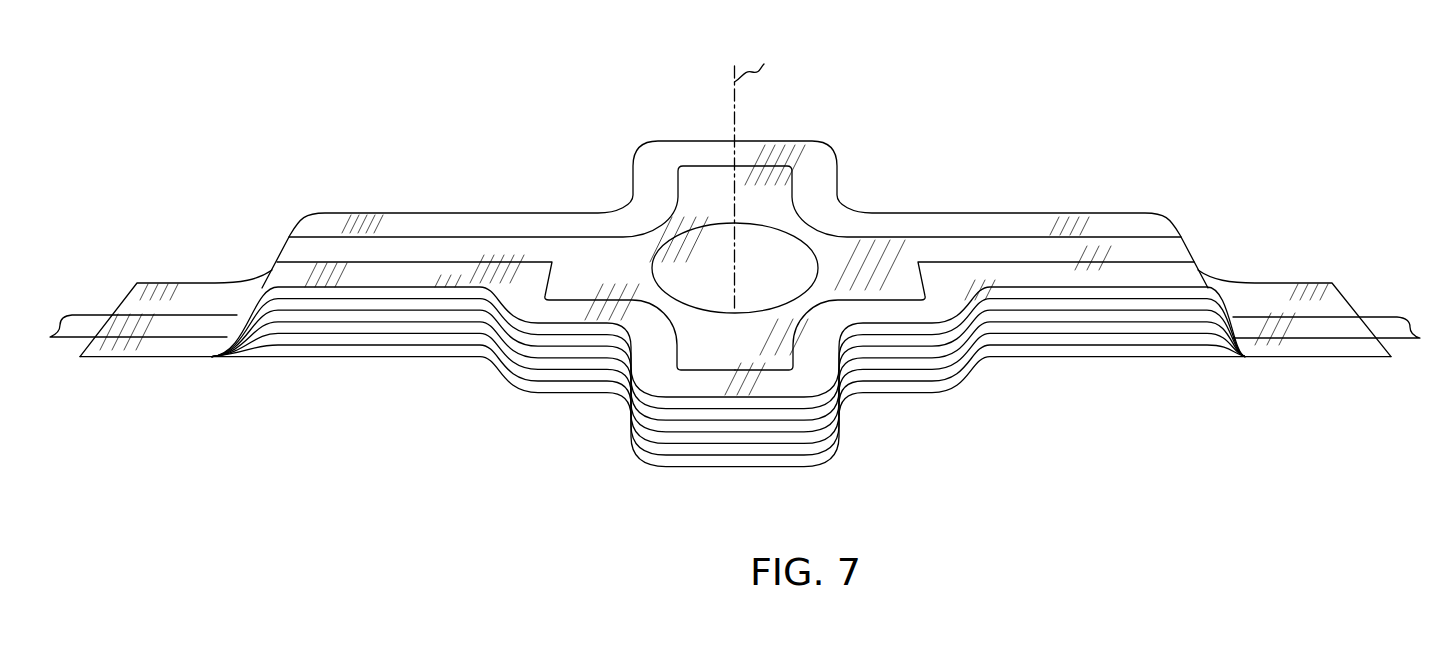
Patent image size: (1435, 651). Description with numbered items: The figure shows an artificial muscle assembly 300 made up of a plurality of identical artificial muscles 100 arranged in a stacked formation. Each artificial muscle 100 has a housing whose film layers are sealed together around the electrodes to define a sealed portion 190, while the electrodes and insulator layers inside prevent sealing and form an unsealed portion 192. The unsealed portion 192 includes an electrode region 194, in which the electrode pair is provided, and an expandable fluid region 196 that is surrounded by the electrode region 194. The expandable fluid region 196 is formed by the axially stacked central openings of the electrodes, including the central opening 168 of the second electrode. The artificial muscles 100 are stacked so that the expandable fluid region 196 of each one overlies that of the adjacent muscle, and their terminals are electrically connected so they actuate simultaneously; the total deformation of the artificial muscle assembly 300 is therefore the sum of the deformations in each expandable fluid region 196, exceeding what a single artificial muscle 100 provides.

The artificial muscle 100 is at (728, 334).
The central opening 168 is at (774, 242).
The sealed portion 190 is at (735, 226).
The unsealed portion 192 is at (506, 275).
The electrode region 194 is at (964, 271).
The expandable fluid region 196 is at (735, 210).
The artificial muscle assembly 300 is at (735, 249).